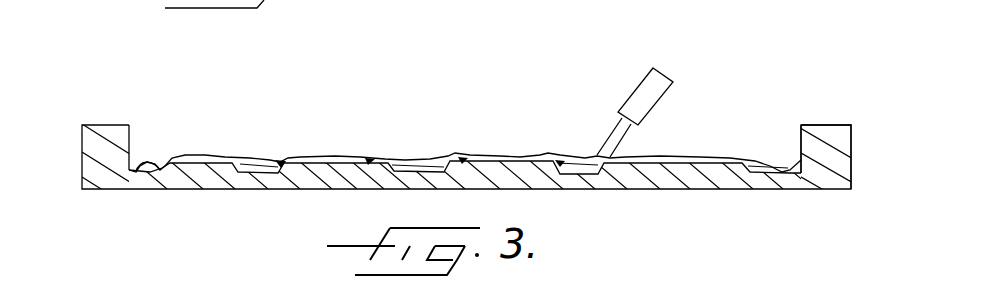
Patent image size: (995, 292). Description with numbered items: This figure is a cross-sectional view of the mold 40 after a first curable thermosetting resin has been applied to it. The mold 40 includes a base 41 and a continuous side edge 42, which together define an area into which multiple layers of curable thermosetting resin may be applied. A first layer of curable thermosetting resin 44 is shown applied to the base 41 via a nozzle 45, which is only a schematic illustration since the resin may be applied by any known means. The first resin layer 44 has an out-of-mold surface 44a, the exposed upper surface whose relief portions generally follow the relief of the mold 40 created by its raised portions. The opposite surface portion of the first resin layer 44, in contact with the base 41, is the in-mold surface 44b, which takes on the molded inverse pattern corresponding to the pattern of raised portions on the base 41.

The mold 40 is at (97, 98).
The base 41 is at (159, 177).
The continuous side edge 42 is at (823, 127).
The first layer of curable thermosetting resin 44 is at (698, 155).
The out-of-mold surface 44a is at (362, 157).
The in-mold surface 44b is at (280, 165).
The nozzle 45 is at (660, 72).